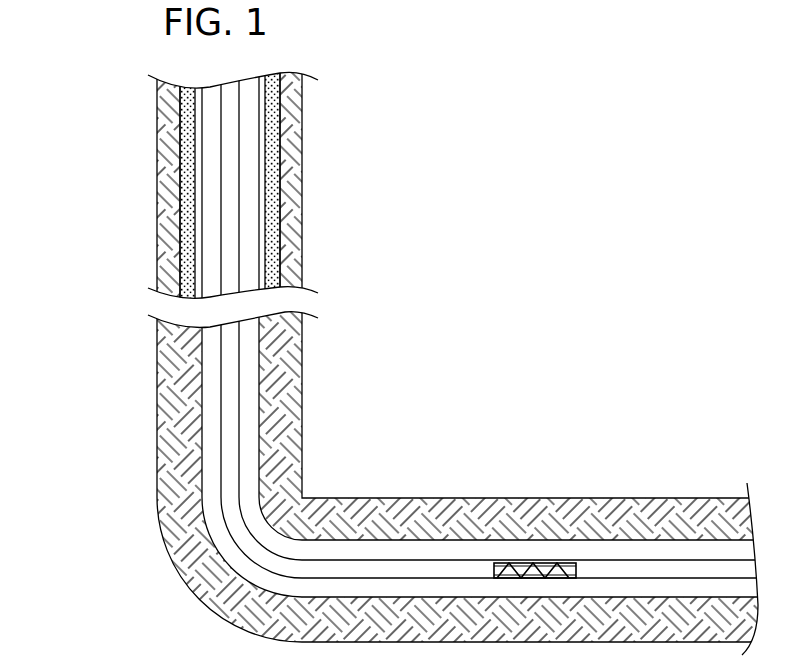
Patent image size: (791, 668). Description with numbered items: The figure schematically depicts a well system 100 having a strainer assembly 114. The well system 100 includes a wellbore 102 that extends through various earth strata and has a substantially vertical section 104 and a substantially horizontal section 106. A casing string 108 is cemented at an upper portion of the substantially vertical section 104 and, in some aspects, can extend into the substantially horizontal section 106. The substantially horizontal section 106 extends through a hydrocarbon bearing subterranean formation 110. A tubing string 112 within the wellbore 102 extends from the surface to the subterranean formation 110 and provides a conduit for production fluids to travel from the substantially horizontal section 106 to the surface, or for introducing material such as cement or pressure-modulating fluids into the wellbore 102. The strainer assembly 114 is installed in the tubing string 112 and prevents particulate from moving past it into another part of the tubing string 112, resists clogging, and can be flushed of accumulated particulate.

The well system 100 is at (116, 125).
The wellbore 102 is at (260, 417).
The substantially vertical section 104 is at (262, 366).
The substantially horizontal section 106 is at (612, 532).
The casing string 108 is at (278, 186).
The subterranean formation 110 is at (537, 353).
The tubing string 112 is at (240, 455).
The strainer assembly 114 is at (521, 564).